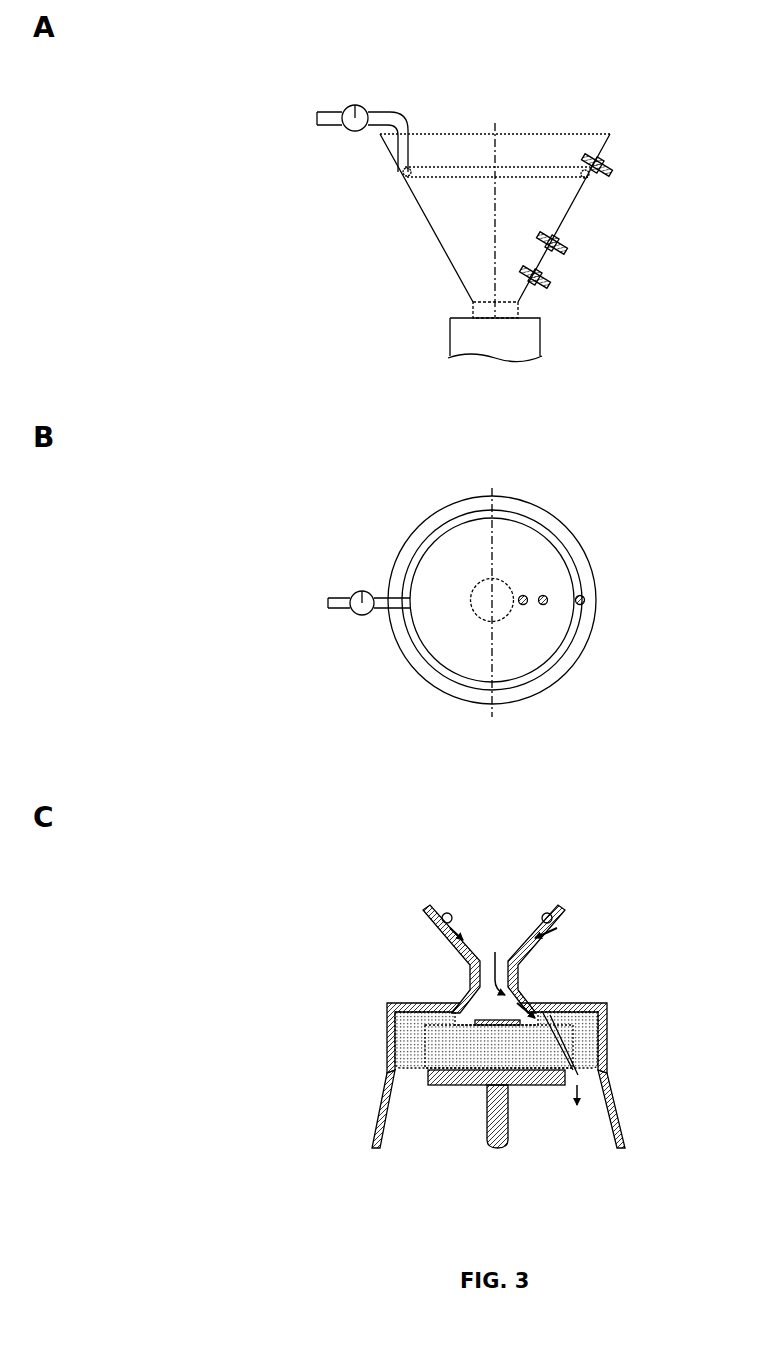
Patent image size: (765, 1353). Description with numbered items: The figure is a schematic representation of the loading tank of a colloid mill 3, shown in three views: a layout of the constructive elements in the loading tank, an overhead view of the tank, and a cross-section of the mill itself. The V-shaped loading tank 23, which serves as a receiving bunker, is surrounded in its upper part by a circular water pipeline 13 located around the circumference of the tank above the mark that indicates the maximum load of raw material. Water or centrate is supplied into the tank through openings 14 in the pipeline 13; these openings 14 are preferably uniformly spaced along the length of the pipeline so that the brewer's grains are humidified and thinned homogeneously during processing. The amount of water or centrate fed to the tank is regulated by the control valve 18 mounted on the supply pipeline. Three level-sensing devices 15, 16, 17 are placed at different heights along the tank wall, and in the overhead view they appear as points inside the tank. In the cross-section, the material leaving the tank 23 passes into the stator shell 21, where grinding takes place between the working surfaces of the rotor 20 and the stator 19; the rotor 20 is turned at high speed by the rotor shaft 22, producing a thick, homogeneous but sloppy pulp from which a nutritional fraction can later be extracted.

The colloid mill 3 is at (595, 1003).
The circular water pipeline 13 is at (457, 170).
The openings in the pipeline 14 is at (563, 180).
The level-sensing device 15 is at (543, 287).
The level-sensing device 16 is at (563, 253).
The level-sensing device 17 is at (608, 176).
The control valve for water supply 18 is at (355, 112).
The stator 19 is at (410, 1043).
The rotor 20 is at (470, 1047).
The stator shell 21 is at (377, 1117).
The rotor shaft 22 is at (502, 1122).
The loading tank 23 is at (537, 142).